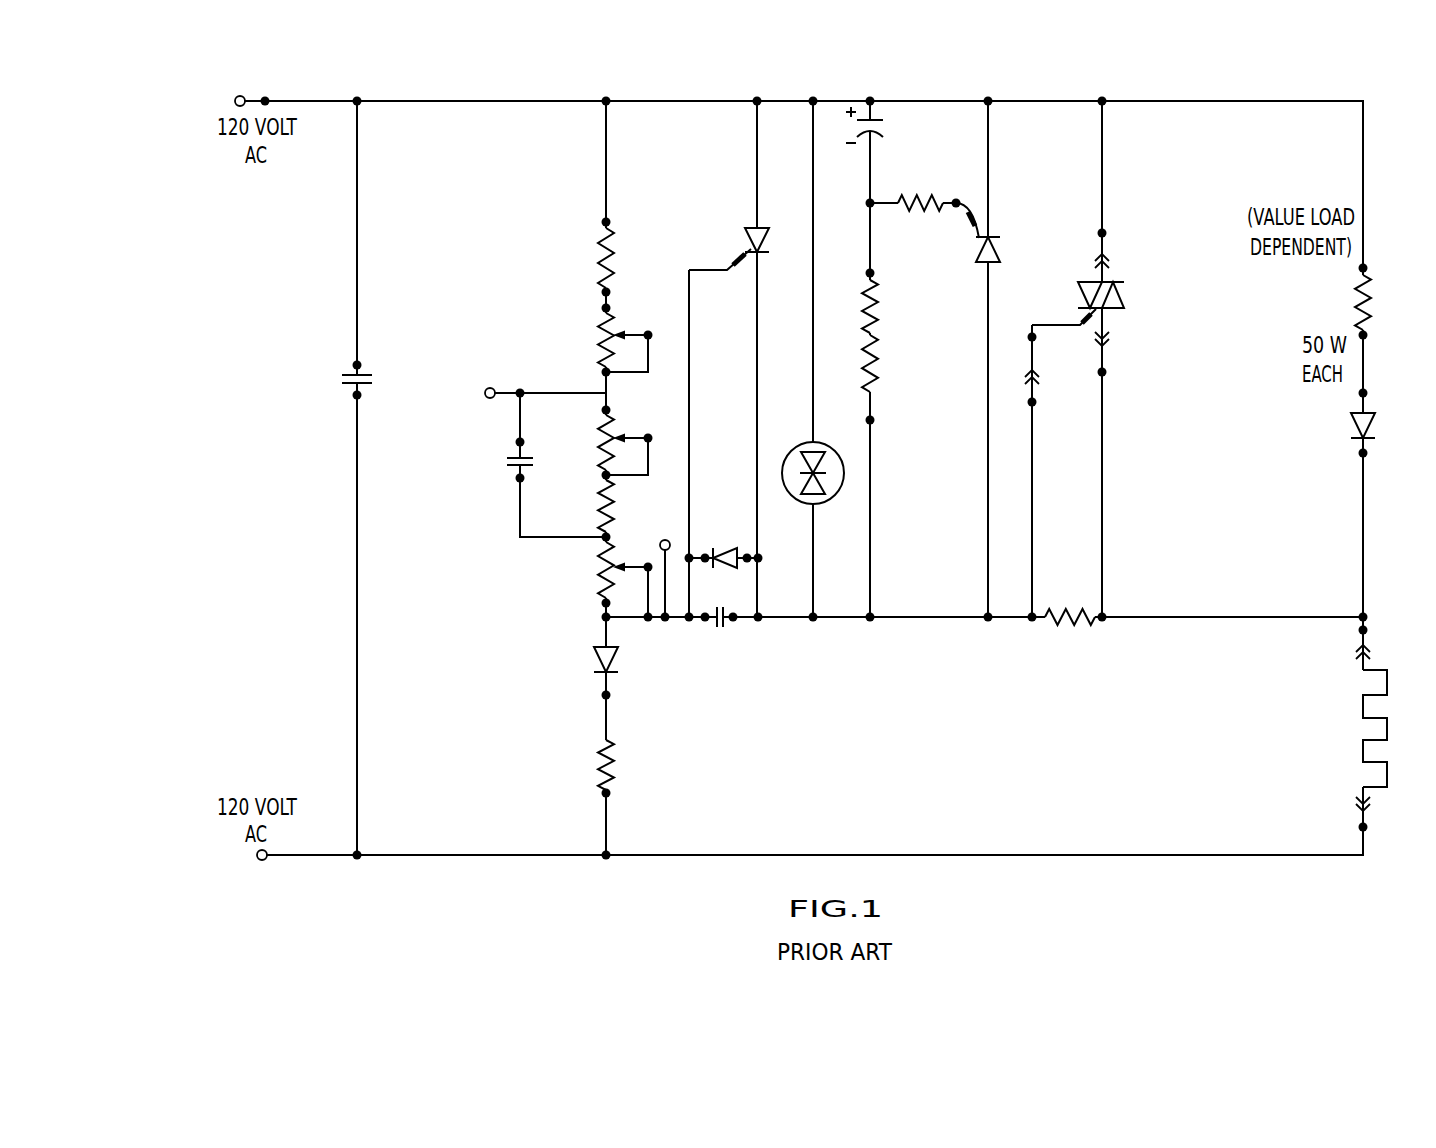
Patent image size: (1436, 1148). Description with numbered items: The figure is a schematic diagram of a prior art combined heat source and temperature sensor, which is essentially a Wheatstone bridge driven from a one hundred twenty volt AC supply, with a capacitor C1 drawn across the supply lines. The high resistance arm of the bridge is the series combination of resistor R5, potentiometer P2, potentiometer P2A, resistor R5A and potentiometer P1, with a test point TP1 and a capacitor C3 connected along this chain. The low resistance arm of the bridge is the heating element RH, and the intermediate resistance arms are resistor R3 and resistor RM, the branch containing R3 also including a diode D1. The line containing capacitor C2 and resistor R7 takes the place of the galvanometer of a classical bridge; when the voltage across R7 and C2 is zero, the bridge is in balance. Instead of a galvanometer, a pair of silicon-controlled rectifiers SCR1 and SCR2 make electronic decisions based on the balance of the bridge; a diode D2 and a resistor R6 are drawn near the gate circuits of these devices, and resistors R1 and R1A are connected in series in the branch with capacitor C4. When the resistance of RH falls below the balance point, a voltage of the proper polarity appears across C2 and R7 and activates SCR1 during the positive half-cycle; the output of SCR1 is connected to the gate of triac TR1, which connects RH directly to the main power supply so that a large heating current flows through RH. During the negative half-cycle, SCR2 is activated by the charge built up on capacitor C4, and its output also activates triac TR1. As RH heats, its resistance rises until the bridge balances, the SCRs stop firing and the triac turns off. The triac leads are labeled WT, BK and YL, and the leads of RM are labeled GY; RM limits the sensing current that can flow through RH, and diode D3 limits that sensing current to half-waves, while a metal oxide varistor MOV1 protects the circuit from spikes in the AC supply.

The capacitor 0.22 MFD 600 VDC C1 is at (313, 395).
The resistor R5 is at (586, 257).
The potentiometer P2 is at (605, 340).
The test point TP1 is at (495, 375).
The potentiometer P2A is at (605, 439).
The capacitor 600pF 1000 VDC C3 is at (521, 467).
The resistor R5A is at (588, 504).
The potentiometer P1 is at (607, 579).
The diode D1 is at (590, 669).
The resistor R3 is at (650, 768).
The capacitor C2 is at (719, 663).
The diode D2 is at (724, 541).
The silicon-controlled rectifier SCR1 is at (728, 228).
The metal oxide varistor MOV1 is at (806, 455).
The capacitor C4 is at (889, 133).
The resistor 2.2K R6 is at (913, 208).
The resistor 17.4K R1 is at (882, 301).
The resistor 17.4K R1A is at (879, 380).
The silicon-controlled rectifier SCR2 is at (1009, 228).
The triac TR1 is at (1128, 318).
The white wire lead WT is at (1117, 167).
The black wire lead BK is at (1117, 494).
The yellow wire lead YL is at (1048, 502).
The resistor R7 is at (1062, 651).
The resistor RM is at (1347, 302).
The gray wire lead GY is at (1379, 322).
The diode D3 is at (1379, 423).
The heating element RH is at (1358, 729).